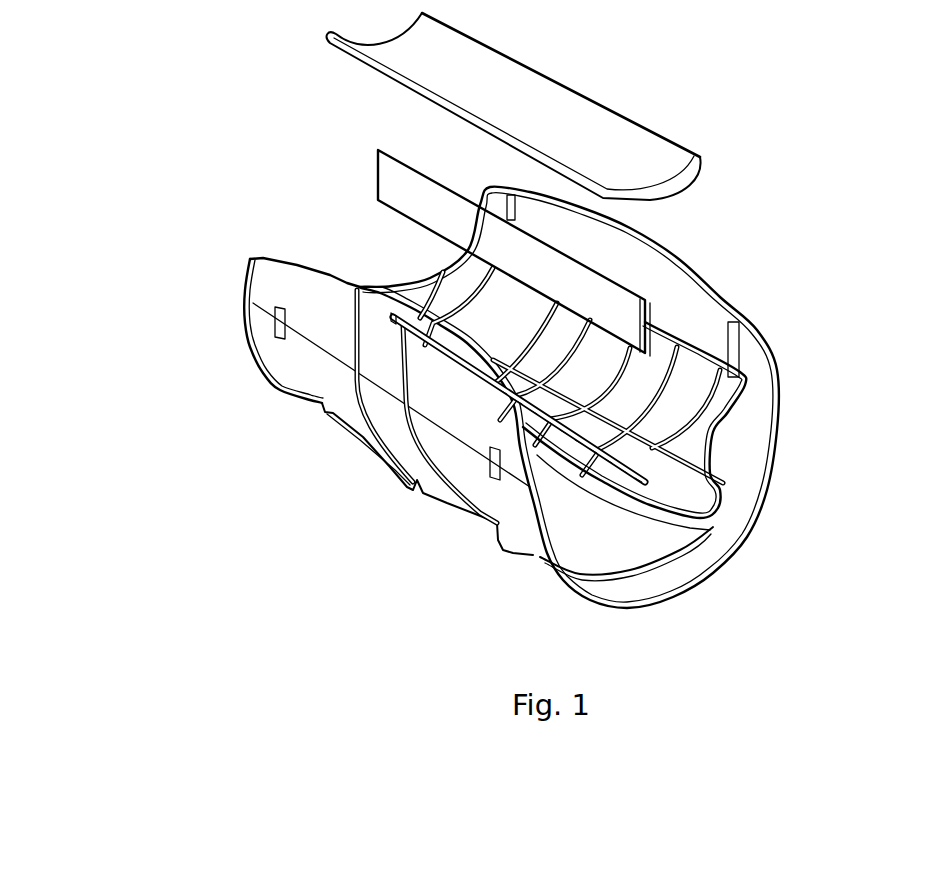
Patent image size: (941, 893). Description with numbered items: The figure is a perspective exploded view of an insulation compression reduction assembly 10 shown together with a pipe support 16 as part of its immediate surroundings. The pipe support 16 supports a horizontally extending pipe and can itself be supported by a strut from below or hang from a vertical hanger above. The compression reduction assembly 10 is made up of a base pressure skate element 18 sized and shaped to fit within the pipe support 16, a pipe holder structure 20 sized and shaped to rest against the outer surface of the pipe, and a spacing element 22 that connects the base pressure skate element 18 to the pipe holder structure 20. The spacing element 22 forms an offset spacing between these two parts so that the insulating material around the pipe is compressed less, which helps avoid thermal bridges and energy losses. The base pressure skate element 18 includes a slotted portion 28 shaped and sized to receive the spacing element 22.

The insulation compression reduction assembly 10 is at (180, 191).
The pipe support 16 is at (668, 562).
The base pressure skate element 18 is at (698, 429).
The pipe holder structure 20 is at (665, 172).
The spacing element 22 is at (667, 323).
The slotted portion 28 is at (653, 486).